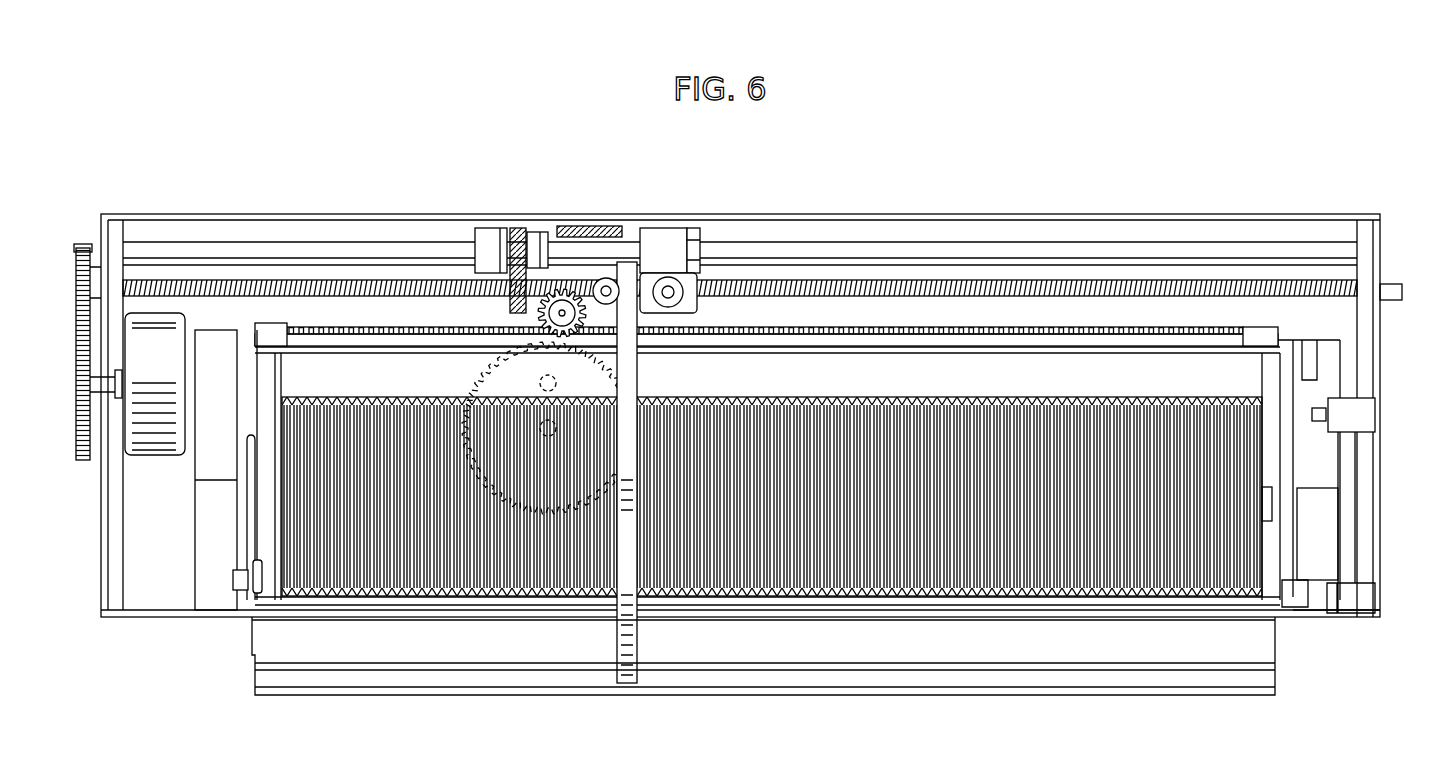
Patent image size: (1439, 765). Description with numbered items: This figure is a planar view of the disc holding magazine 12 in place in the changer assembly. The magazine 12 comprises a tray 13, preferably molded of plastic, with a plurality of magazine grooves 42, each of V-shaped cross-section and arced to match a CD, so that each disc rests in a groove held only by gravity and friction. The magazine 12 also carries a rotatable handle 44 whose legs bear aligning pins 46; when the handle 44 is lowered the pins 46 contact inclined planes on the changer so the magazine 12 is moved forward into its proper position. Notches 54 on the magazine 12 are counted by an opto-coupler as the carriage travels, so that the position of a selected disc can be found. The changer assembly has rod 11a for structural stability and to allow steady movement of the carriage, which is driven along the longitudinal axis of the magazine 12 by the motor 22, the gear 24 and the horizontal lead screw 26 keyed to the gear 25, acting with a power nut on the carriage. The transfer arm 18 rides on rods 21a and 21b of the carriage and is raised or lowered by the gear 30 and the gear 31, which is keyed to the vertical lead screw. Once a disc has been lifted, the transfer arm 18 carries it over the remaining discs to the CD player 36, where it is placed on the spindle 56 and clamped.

The rod 11a is at (790, 250).
The magazine 12 is at (898, 310).
The tray 13 is at (1208, 570).
The transfer arm 18 is at (638, 642).
The rod 21a is at (606, 288).
The rod 21b is at (668, 290).
The motor 22 is at (155, 322).
The gear 24 is at (82, 330).
The gear 25 is at (84, 250).
The horizontal lead screw 26 is at (1000, 285).
The gear 30 is at (470, 380).
The gear 31 is at (560, 290).
The CD player 36 is at (1345, 418).
The magazine grooves 42 is at (745, 540).
The rotatable handle 44 is at (1010, 684).
The aligning pins 46 is at (233, 575).
The notches 54 is at (1068, 333).
The spindle 56 is at (1320, 408).